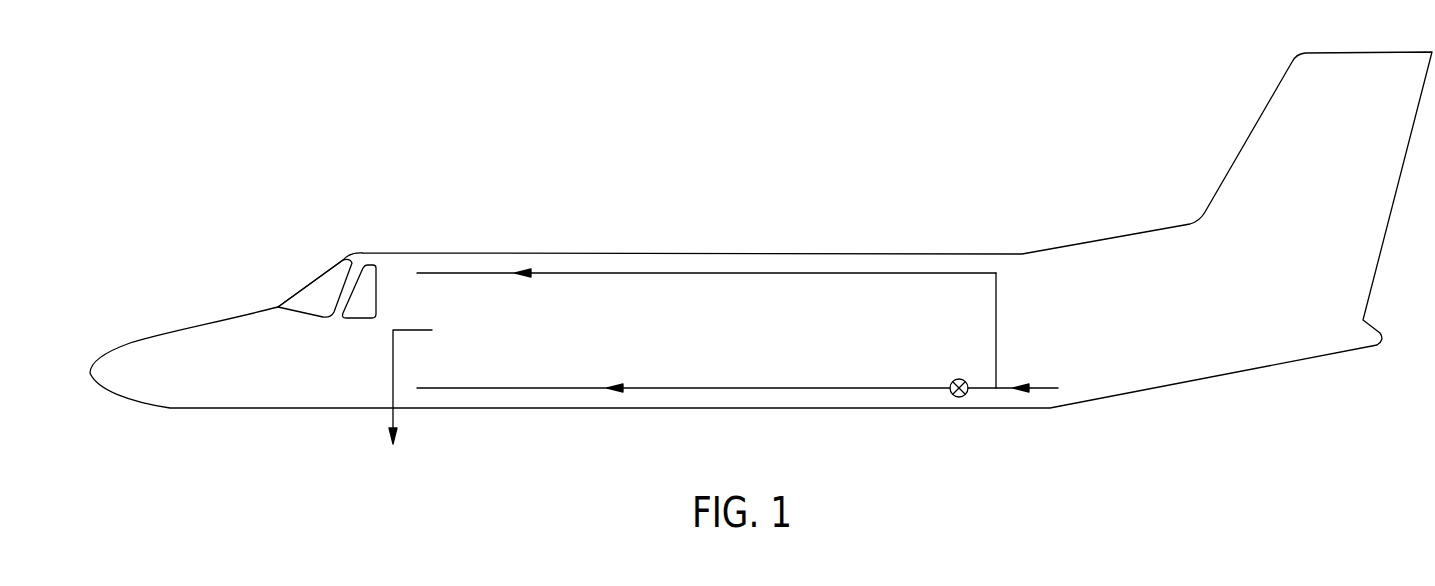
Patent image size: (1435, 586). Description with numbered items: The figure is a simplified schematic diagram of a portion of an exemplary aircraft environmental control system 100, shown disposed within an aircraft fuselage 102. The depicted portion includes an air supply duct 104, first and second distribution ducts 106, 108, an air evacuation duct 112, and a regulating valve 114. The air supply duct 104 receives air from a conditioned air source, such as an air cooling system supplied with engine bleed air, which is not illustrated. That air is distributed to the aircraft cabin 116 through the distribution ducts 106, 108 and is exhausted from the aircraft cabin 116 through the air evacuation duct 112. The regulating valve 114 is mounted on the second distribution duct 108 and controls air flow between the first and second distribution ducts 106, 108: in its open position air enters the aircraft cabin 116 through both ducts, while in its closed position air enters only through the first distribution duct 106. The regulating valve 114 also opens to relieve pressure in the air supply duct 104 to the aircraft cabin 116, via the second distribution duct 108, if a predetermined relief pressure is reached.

The aircraft environmental control system 100 is at (761, 230).
The aircraft fuselage 102 is at (753, 254).
The air supply duct 104 is at (1040, 388).
The first distribution duct 106 is at (608, 273).
The second distribution duct 108 is at (893, 388).
The air evacuation duct 112 is at (393, 367).
The regulating valve 114 is at (960, 397).
The aircraft cabin 116 is at (687, 336).